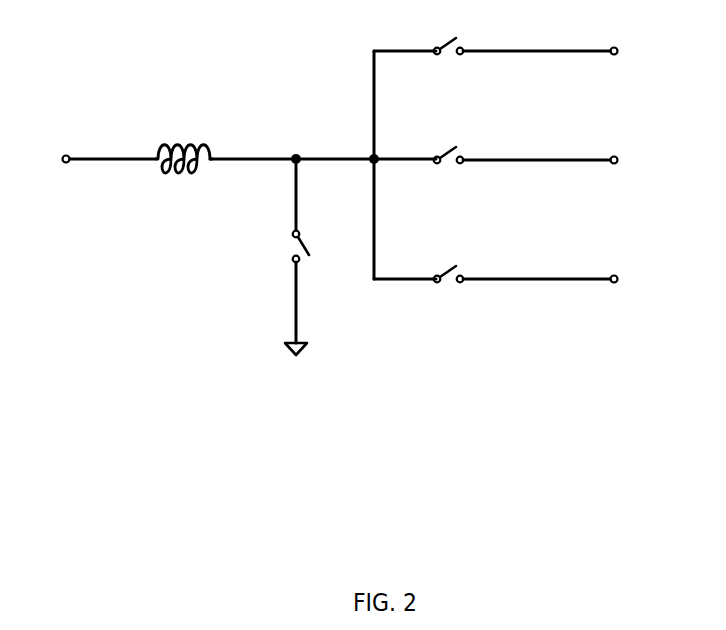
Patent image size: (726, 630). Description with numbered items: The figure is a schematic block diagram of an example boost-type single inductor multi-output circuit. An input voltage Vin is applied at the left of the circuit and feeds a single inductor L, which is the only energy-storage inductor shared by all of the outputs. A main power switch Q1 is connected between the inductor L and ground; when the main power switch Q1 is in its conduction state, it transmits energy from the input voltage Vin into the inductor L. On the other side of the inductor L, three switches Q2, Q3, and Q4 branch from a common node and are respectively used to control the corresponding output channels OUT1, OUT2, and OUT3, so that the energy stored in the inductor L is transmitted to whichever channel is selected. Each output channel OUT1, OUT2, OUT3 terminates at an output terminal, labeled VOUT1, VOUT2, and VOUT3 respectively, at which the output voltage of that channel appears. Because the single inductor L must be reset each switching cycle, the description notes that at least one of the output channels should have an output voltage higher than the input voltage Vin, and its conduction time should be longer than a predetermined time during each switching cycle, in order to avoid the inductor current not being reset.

The input voltage Vin is at (86, 158).
The inductor L is at (184, 145).
The main power switch Q1 is at (283, 259).
The switch Q2 is at (448, 59).
The switch Q3 is at (448, 168).
The switch Q4 is at (448, 286).
The output channel OUT1 is at (536, 41).
The output channel OUT2 is at (536, 151).
The output channel OUT3 is at (536, 269).
The first output voltage terminal VOUT1 is at (648, 54).
The second output voltage terminal VOUT2 is at (648, 164).
The third output voltage terminal VOUT3 is at (648, 280).